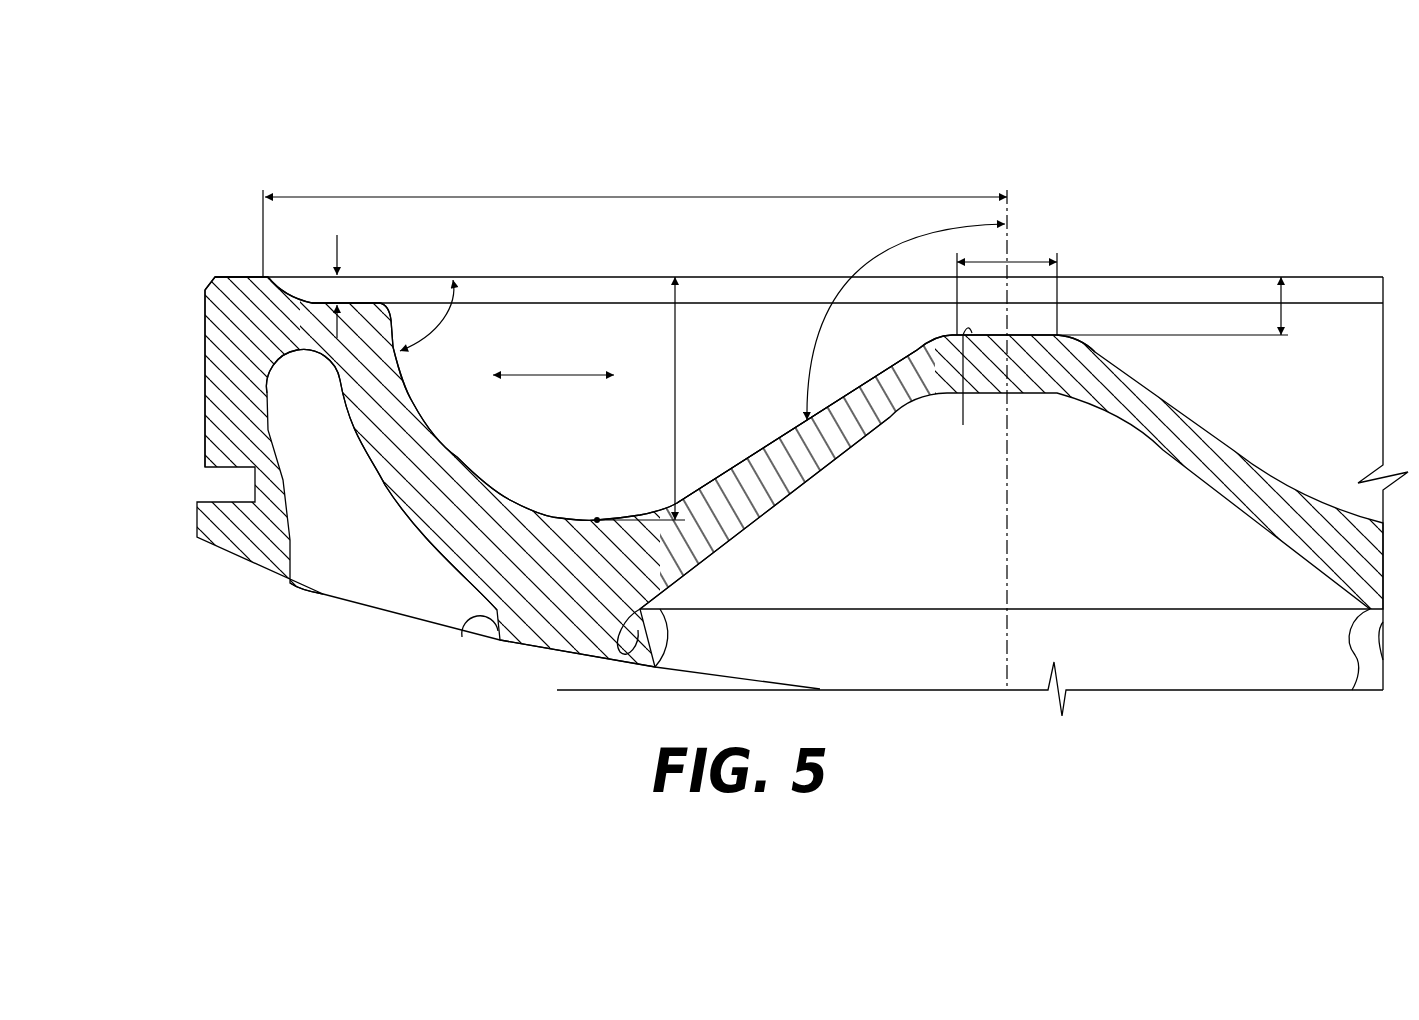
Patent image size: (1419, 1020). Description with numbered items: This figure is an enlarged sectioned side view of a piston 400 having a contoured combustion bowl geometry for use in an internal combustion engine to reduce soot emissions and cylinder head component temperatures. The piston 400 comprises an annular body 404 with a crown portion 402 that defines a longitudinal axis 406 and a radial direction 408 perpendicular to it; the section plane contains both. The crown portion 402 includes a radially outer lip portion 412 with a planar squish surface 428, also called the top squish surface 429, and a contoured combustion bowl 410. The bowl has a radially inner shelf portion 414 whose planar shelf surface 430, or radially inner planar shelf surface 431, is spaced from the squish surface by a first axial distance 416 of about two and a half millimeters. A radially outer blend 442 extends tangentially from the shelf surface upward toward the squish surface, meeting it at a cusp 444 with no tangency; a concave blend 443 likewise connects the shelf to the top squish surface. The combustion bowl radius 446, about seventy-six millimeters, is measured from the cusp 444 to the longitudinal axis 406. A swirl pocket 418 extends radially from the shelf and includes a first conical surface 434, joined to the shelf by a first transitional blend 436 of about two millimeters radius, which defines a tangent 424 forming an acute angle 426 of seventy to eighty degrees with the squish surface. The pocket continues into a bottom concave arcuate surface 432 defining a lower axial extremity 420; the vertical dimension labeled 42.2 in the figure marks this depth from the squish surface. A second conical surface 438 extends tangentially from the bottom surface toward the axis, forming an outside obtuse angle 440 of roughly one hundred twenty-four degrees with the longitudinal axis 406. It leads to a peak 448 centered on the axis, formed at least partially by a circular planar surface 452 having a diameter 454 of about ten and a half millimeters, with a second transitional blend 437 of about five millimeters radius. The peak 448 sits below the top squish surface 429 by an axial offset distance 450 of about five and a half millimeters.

The piston 400 is at (967, 138).
The crown portion 402 is at (189, 287).
The annular body 404 is at (190, 442).
The longitudinal axis 406 is at (1007, 295).
The radial direction 408 is at (545, 376).
The contoured combustion bowl 410 is at (583, 342).
The radially outer lip portion 412 is at (232, 276).
The radially inner shelf portion 414 is at (357, 296).
The first axial distance 416 is at (338, 250).
The swirl pocket 418 is at (460, 430).
The lower axial extremity 420 is at (597, 521).
The tangent 424 is at (390, 342).
The acute angle 426 is at (457, 333).
The planar squish surface 428 is at (225, 276).
The top squish surface 429 is at (243, 274).
The planar shelf surface 430 is at (387, 303).
The radially inner planar shelf surface 431 is at (324, 302).
The bottom concave arcuate surface 432 is at (470, 481).
The first conical surface 434 is at (340, 378).
The first transitional blend 436 is at (392, 308).
The second transitional blend 437 is at (918, 352).
The second conical surface 438 is at (747, 458).
The outside obtuse angle 440 is at (860, 265).
The radially outer blend 442 is at (265, 289).
The concave blend 443 is at (277, 292).
The cusp 444 is at (268, 277).
The combustion bowl radius 446 is at (693, 197).
The peak 448 is at (1028, 333).
The axial offset distance 450 is at (1281, 296).
The circular planar surface 452 is at (965, 415).
The diameter 454 is at (1057, 262).
The bowl depth dimension 42.2 is at (676, 345).